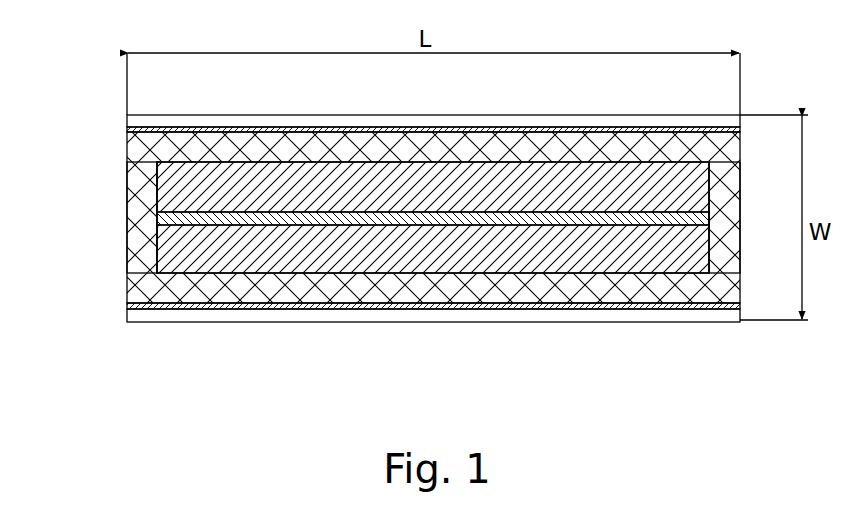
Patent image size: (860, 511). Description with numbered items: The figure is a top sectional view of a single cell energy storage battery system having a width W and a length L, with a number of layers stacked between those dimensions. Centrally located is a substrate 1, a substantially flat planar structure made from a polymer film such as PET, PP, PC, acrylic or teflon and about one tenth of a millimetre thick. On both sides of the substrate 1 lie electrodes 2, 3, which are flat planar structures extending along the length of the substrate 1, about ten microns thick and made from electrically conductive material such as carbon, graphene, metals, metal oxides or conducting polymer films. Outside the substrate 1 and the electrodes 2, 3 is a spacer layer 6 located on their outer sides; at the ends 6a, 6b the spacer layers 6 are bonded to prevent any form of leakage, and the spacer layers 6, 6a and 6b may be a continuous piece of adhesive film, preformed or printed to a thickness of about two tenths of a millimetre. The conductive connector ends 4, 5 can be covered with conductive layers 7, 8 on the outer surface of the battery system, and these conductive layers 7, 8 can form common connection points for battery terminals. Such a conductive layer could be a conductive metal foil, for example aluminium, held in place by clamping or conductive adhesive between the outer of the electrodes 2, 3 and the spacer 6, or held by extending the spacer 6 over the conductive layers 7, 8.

The substrate 1 is at (172, 220).
The electrode 2 is at (686, 183).
The electrode 3 is at (687, 243).
The conductive connector end 4 is at (125, 128).
The conductive connector end 5 is at (126, 308).
The spacer layer 6 is at (151, 152).
The end of spacer layer 6a is at (146, 243).
The end of spacer layer 6b is at (720, 220).
The conductive layer 7 is at (265, 113).
The conductive layer 8 is at (261, 324).